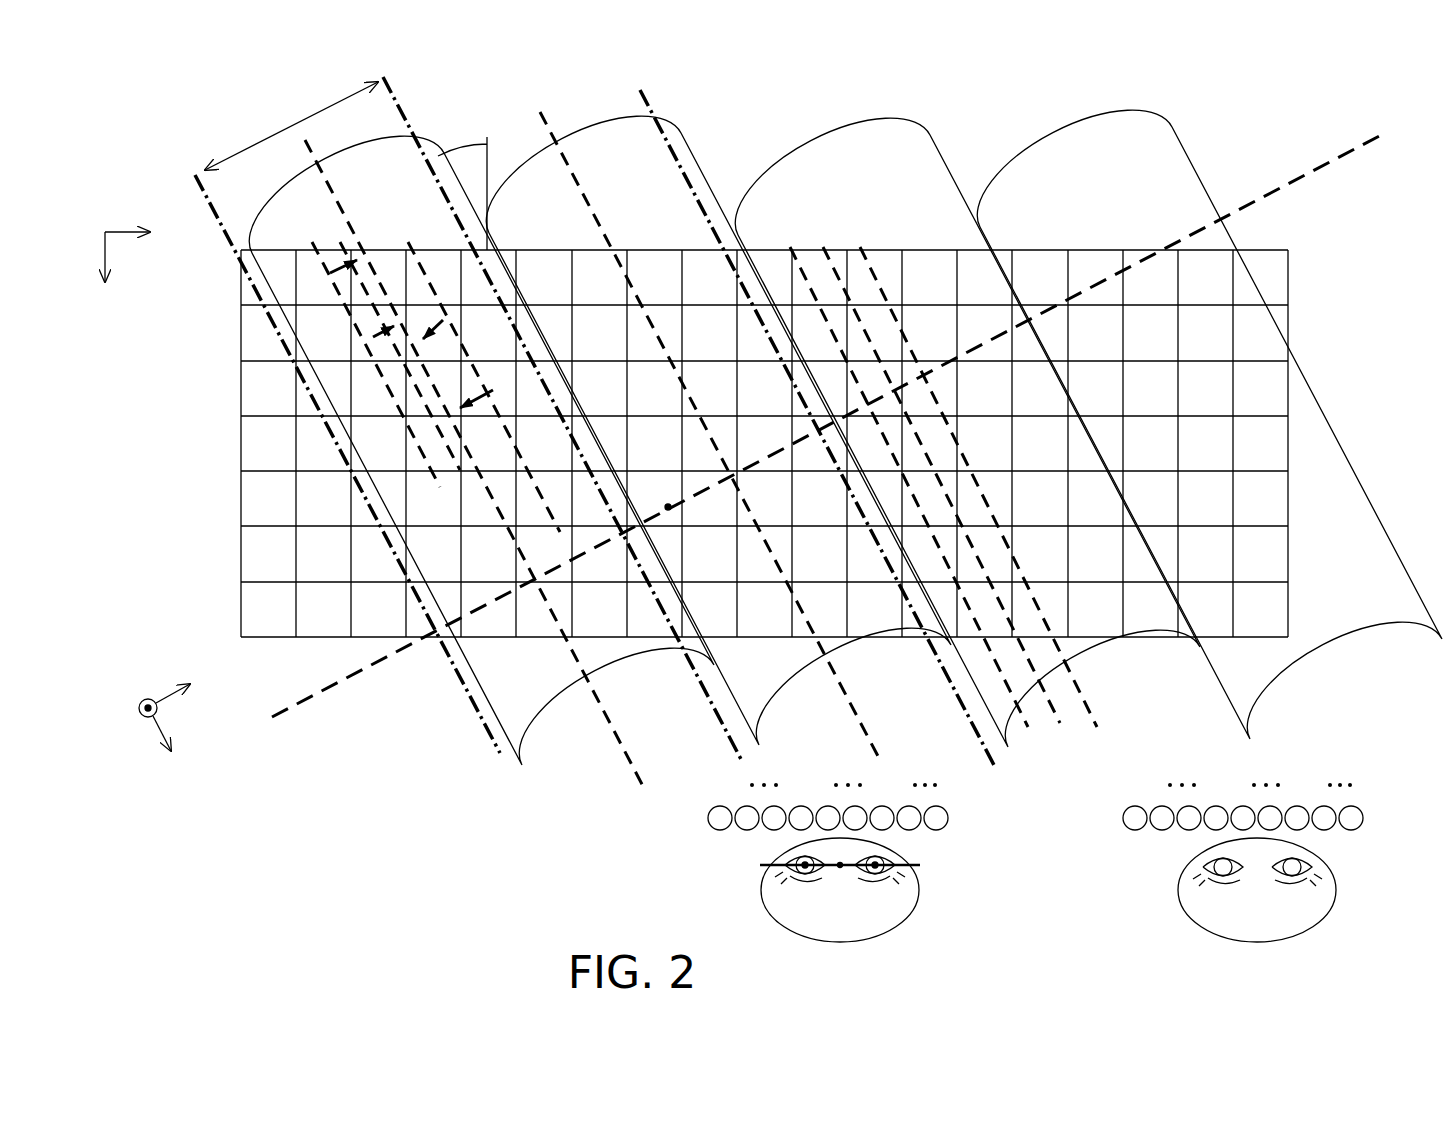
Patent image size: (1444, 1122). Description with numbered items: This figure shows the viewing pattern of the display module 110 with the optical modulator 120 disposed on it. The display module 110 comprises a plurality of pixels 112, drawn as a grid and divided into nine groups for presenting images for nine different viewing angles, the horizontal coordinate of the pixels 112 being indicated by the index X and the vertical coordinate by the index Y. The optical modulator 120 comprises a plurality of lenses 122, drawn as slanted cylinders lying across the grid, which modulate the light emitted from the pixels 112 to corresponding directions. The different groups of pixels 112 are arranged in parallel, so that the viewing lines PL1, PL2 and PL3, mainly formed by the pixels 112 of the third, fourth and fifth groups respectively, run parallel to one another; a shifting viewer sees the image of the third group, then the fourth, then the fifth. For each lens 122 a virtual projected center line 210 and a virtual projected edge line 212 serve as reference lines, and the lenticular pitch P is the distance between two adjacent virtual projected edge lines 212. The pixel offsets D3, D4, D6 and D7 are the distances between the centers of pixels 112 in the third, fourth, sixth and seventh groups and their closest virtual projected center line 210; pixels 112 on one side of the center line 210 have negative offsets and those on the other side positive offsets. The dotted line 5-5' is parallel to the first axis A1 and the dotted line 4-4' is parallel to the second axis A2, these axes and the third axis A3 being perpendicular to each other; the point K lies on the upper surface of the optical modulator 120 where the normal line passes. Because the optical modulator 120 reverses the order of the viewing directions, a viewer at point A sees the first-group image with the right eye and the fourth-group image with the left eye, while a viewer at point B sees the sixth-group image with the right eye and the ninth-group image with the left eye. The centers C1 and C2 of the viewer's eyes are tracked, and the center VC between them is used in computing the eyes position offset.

The display module 110 is at (1270, 250).
The pixels 112 is at (1290, 553).
The optical modulator 120 is at (1190, 152).
The lenses 122 is at (601, 147).
The virtual projected center line 210 is at (305, 152).
The virtual projected edge line 212 is at (202, 186).
The lenticular pitch P is at (291, 126).
The pixel offset D3 is at (334, 268).
The pixel offset D4 is at (374, 332).
The pixel offset D6 is at (442, 316).
The pixel offset D7 is at (476, 400).
The viewing line PL1 is at (790, 247).
The viewing line PL2 is at (826, 247).
The viewing line PL3 is at (845, 221).
The point K is at (668, 510).
The dotted line 5-5' 5 is at (706, 436).
The dotted line 5- 5' is at (818, 735).
The dotted line 4-4' 4 is at (825, 454).
The dotted line 4- 4' is at (1415, 158).
The index X is at (145, 233).
The index Y is at (104, 278).
The first axis A1 is at (174, 754).
The second axis A2 is at (195, 684).
The third axis A3 is at (147, 717).
The center of eye C1 is at (798, 875).
The center of eye C2 is at (882, 877).
The center of the centers of the eyes VC is at (840, 870).
The point A is at (840, 876).
The point B is at (1254, 876).